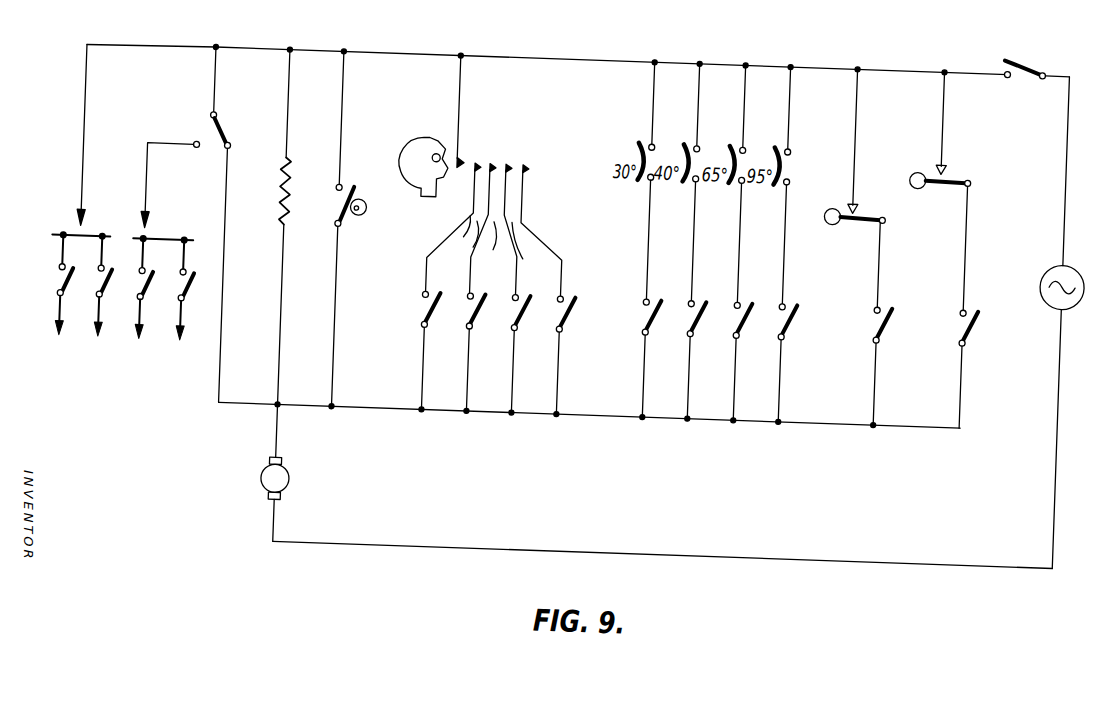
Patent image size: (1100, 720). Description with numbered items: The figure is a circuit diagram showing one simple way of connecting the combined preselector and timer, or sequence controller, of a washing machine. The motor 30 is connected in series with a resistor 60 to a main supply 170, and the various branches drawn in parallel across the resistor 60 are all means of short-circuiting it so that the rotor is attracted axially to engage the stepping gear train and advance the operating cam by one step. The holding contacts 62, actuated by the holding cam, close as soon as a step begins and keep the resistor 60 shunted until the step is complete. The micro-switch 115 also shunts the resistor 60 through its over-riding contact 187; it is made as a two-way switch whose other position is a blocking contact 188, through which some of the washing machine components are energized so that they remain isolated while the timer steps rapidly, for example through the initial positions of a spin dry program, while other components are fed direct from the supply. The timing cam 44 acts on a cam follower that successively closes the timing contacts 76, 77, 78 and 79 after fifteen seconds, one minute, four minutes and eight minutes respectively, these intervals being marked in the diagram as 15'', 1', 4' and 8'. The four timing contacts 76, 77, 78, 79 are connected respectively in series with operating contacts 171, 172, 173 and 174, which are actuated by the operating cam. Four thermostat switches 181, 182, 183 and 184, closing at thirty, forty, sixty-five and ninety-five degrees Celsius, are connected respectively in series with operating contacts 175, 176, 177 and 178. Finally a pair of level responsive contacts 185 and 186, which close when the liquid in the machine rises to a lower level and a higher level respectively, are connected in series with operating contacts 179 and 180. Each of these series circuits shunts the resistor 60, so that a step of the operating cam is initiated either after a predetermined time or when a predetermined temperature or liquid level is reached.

The micro-switch 115 is at (232, 130).
The over-riding contact 187 is at (234, 146).
The blocking contact 188 is at (200, 148).
The resistor 60 is at (284, 201).
The holding contacts 62 is at (340, 206).
The timing cam 44 is at (401, 140).
The quarter minute timing contact 76 is at (480, 150).
The one minute contacts 77 is at (494, 150).
The timing contact 78 is at (510, 150).
The timing contact 79 is at (527, 150).
The conductor 15'' is at (455, 217).
The conductor 1' is at (466, 237).
The conductor 4' is at (496, 240).
The conductor 8' is at (522, 247).
The operating contact 171 is at (428, 319).
The operating contact 172 is at (473, 319).
The operating contact 173 is at (518, 319).
The operating contact 174 is at (563, 319).
The operating contact 175 is at (649, 319).
The operating contact 176 is at (694, 319).
The operating contact 177 is at (740, 319).
The operating contact 178 is at (785, 319).
The operating contact 179 is at (880, 318).
The operating contact 180 is at (966, 318).
The thermostat switch 181 is at (641, 132).
The thermostat switch 182 is at (686, 132).
The thermostat switch 183 is at (732, 132).
The thermostat switch 184 is at (777, 132).
The level responsive contact 185 is at (863, 188).
The level responsive contact 186 is at (950, 147).
The main supply 170 is at (1057, 276).
The motor 30 is at (297, 476).